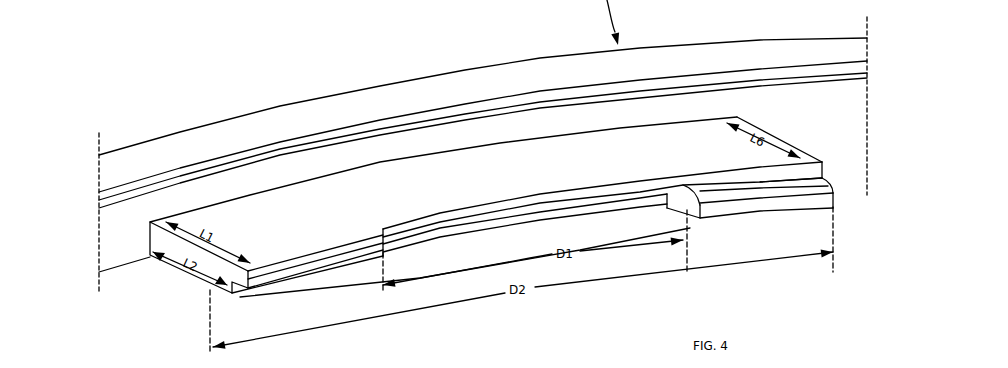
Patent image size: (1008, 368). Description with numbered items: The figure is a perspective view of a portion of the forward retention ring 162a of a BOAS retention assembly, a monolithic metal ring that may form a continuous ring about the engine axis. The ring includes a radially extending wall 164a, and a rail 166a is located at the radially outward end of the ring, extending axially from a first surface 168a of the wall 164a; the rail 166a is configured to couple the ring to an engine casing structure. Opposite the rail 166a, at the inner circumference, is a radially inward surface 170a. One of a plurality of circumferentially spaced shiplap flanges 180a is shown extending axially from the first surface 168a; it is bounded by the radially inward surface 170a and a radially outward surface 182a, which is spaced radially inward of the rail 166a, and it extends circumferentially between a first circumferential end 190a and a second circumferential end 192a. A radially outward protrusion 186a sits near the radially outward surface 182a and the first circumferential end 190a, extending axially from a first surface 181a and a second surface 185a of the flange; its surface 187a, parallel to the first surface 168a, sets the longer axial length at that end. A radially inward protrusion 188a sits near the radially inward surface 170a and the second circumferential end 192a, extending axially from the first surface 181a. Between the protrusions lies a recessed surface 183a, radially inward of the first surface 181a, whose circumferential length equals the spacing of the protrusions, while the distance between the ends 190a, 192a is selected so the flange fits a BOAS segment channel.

The forward retention ring 162a is at (110, 102).
The radially extending wall 164a is at (107, 253).
The rail 166a is at (273, 124).
The first surface 168a is at (483, 143).
The radially inward surface 170a is at (143, 258).
The shiplap flange 180a is at (517, 167).
The first surface 181a is at (803, 170).
The radially outward surface 182a is at (465, 232).
The recessed surface 183a is at (583, 207).
The second surface 185a is at (252, 286).
The radially outward protrusion 186a is at (378, 233).
The surface of radially outward protrusion 187a is at (338, 253).
The radially inward protrusion 188a is at (782, 205).
The first circumferential end 190a is at (163, 243).
The second circumferential end 192a is at (803, 143).